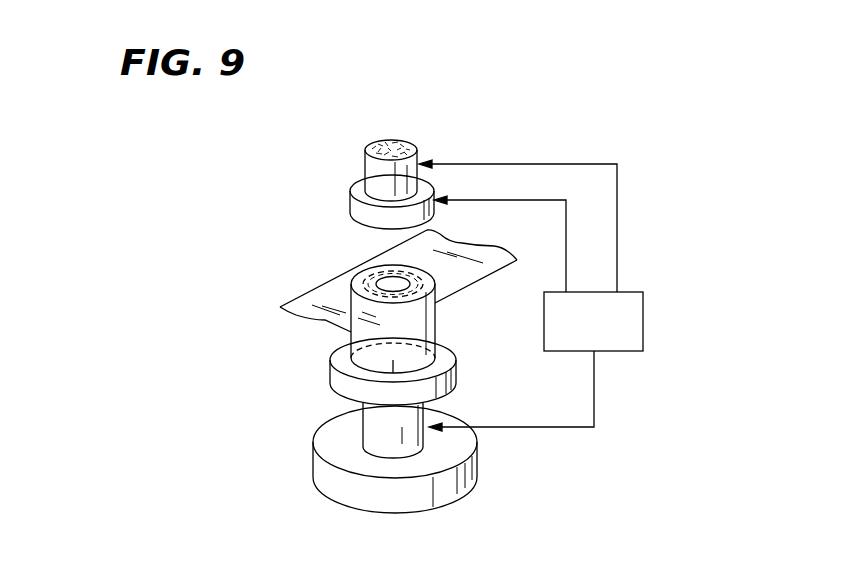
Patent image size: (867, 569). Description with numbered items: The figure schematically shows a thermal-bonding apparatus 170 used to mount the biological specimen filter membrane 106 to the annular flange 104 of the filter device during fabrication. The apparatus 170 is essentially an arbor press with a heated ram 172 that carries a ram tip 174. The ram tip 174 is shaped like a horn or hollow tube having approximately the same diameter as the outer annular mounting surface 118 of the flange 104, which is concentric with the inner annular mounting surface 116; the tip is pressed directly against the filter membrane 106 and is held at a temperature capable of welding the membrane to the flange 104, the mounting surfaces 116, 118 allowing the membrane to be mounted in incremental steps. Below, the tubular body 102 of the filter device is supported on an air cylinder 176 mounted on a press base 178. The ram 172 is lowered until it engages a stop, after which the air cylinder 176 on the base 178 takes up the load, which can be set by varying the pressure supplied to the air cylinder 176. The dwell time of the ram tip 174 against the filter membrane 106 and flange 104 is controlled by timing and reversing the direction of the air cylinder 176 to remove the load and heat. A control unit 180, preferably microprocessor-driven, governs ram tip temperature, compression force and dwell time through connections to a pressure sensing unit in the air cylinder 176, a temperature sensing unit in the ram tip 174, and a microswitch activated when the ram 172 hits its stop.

The thermal-bonding apparatus 170 is at (194, 229).
The heated ram 172 is at (365, 160).
The ram tip 174 is at (350, 198).
The inner annular mounting surface 116 is at (381, 272).
The outer annular mounting surface 118 is at (377, 277).
The annular flange 104 is at (290, 305).
The biological specimen filter membrane 106 is at (487, 250).
The tubular body 102 is at (433, 322).
The air cylinder 176 is at (457, 380).
The press base 178 is at (477, 458).
The control unit 180 is at (643, 315).